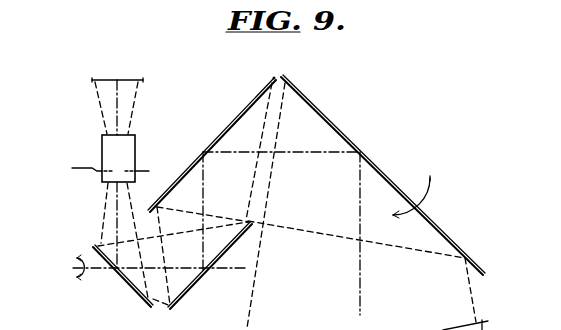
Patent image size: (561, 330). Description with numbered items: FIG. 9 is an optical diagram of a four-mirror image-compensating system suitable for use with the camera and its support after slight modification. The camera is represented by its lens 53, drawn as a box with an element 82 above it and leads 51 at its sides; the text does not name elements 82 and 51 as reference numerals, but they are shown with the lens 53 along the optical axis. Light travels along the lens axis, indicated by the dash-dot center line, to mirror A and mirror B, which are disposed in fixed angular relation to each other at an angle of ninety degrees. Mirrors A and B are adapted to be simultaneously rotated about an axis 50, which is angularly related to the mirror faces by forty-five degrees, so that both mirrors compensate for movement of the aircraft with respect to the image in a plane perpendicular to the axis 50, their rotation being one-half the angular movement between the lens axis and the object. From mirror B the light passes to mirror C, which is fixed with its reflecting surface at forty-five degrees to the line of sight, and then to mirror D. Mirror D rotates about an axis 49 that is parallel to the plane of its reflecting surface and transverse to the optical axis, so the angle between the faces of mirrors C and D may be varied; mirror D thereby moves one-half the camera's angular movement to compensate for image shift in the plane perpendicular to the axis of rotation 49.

The lens 82 is at (123, 79).
The lens 53 is at (135, 143).
The electrical leads 51 is at (101, 172).
The axis 50 is at (73, 268).
The axis of rotation 49 is at (379, 170).
The mirror A is at (126, 281).
The mirror B is at (203, 275).
The mirror C is at (228, 124).
The mirror D is at (330, 118).